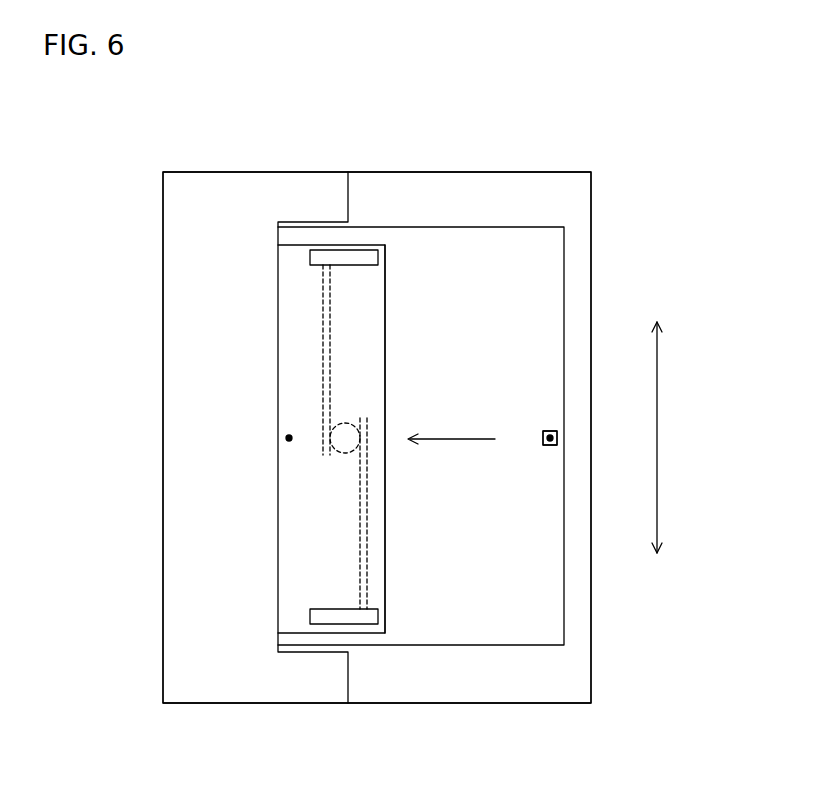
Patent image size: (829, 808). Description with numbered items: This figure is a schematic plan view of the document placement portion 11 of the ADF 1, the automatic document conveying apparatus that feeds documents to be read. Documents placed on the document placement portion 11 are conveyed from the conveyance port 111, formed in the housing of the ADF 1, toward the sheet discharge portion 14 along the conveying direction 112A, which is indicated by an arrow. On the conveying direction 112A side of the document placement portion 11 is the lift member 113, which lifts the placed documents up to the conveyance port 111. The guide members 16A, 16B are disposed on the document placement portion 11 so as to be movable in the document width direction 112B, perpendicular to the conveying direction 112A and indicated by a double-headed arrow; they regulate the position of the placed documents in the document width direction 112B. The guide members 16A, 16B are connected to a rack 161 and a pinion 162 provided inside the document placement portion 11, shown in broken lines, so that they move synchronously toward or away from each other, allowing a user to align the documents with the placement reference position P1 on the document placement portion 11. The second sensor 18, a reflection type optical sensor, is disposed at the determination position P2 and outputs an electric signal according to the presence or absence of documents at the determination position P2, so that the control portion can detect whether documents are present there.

The ADF 1 is at (181, 136).
The document placement portion 11 is at (480, 645).
The sheet discharge portion 14 is at (563, 703).
The guide member 16A is at (378, 253).
The guide member 16B is at (378, 617).
The rack 161 is at (348, 319).
The pinion 162 is at (347, 423).
The second sensor 18 is at (549, 445).
The conveyance port 111 is at (284, 565).
The conveying direction 112A is at (455, 439).
The document width direction 112B is at (659, 430).
The lift member 113 is at (386, 570).
The placement reference position P1 is at (286, 438).
The determination position P2 is at (548, 431).